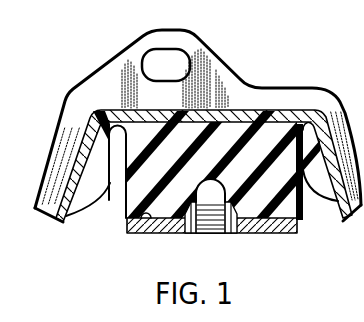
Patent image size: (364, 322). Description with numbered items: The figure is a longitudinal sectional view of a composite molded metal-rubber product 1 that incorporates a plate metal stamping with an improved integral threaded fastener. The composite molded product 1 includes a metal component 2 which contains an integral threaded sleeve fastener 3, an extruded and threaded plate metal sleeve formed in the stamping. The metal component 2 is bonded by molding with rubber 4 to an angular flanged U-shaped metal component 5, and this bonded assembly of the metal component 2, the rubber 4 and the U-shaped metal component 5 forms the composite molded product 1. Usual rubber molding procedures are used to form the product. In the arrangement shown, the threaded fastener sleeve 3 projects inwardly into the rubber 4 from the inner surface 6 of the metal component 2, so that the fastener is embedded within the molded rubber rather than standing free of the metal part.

The composite molded product 1 is at (299, 77).
The metal component 2 is at (213, 110).
The integral threaded sleeve fastener 3 is at (235, 211).
The rubber 4 is at (137, 181).
The U-shaped metal component 5 is at (226, 114).
The inner surface 6 is at (126, 229).